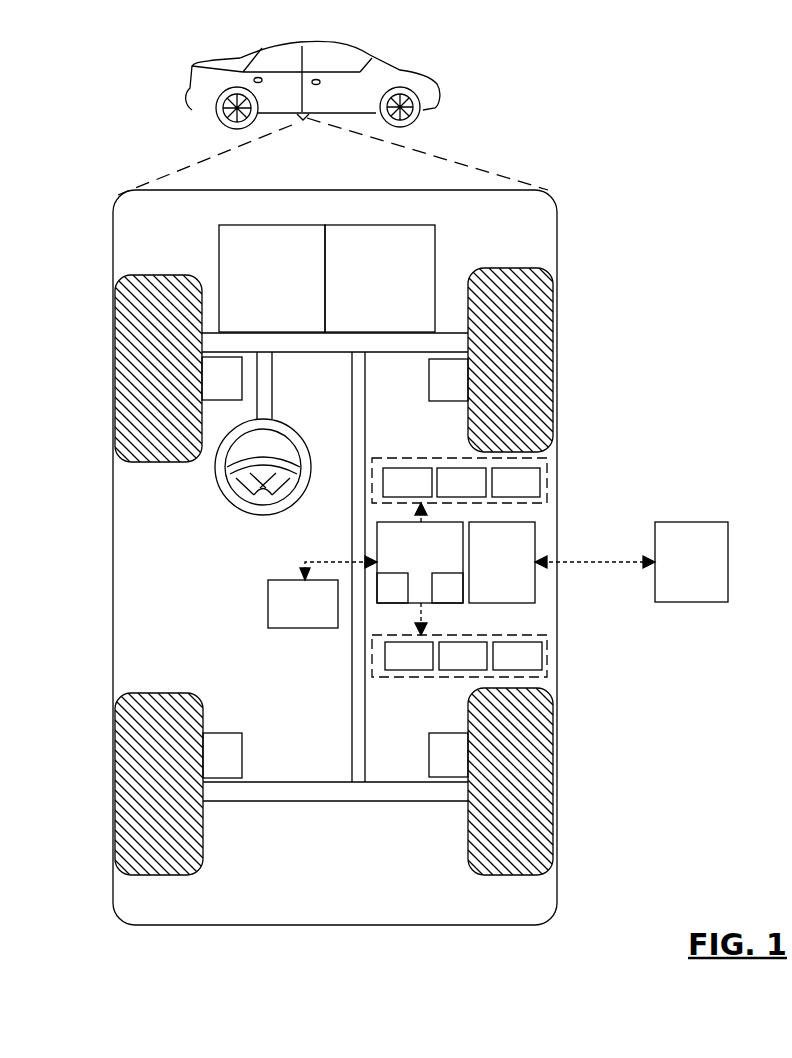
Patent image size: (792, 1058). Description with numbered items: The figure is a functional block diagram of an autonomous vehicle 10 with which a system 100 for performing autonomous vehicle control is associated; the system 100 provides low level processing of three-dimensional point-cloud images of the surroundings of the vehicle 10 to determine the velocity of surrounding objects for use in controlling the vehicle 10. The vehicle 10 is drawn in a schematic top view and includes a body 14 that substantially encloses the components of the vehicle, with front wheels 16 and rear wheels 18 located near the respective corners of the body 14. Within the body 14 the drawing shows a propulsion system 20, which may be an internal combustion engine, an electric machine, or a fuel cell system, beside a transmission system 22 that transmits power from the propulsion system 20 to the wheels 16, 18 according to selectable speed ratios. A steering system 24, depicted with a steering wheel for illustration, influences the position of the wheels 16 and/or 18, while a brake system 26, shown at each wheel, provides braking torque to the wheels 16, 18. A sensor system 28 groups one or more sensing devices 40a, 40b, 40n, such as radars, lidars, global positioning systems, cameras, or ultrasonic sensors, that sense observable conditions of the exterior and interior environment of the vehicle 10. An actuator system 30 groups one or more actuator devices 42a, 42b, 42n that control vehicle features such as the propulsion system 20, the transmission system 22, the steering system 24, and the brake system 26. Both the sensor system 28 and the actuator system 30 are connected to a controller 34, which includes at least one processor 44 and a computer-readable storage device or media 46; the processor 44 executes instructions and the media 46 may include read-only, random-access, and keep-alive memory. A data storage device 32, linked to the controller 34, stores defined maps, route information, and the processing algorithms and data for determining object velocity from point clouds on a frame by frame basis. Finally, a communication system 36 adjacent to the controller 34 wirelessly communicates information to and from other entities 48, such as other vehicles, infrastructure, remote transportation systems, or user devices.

The vehicle 10 is at (190, 94).
The system for performing an autonomous vehicle control 100 is at (577, 208).
The body 14 is at (113, 542).
The front wheels 16 is at (160, 275).
The rear wheels 18 is at (173, 876).
The propulsion system 20 is at (283, 286).
The transmission system 22 is at (390, 286).
The steering system 24 is at (290, 372).
The brake system 26 is at (233, 387).
The sensor system 28 is at (459, 459).
The actuator system 30 is at (459, 678).
The data storage device 32 is at (314, 611).
The controller 34 is at (431, 569).
The communication system 36 is at (513, 571).
The sensing device 40a is at (423, 492).
The sensing device 40b is at (477, 492).
The sensing device 40n is at (531, 492).
The actuator device 42a is at (424, 666).
The actuator device 42b is at (478, 666).
The actuator device 42n is at (532, 666).
The processor 44 is at (403, 599).
The computer-readable storage device or media 46 is at (458, 599).
The other entities 48 is at (702, 570).